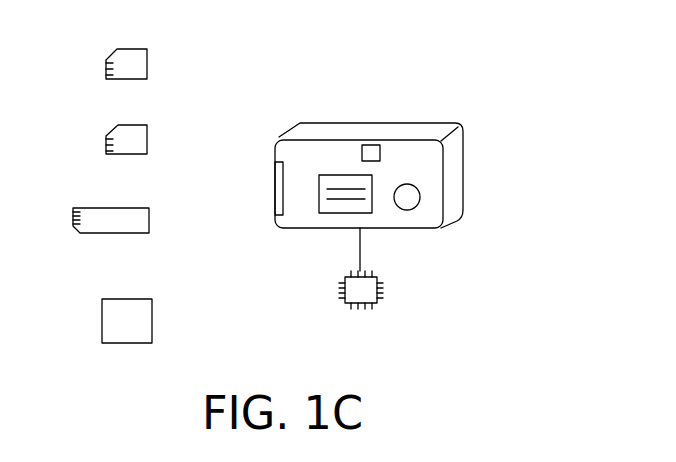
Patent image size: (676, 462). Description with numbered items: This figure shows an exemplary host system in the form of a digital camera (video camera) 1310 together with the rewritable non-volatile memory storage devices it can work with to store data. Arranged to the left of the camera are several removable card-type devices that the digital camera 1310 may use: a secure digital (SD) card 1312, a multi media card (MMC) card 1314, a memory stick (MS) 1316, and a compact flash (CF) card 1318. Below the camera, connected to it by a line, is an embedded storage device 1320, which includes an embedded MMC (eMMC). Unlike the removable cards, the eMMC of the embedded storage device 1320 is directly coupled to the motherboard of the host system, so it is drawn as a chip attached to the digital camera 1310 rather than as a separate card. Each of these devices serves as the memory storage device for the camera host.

The digital camera (video camera) 1310 is at (465, 162).
The secure digital (SD) card 1312 is at (148, 52).
The multi media card (MMC) card 1314 is at (148, 128).
The memory stick (MS) 1316 is at (150, 219).
The compact flash (CF) card 1318 is at (153, 315).
The embedded storage device 1320 is at (381, 292).